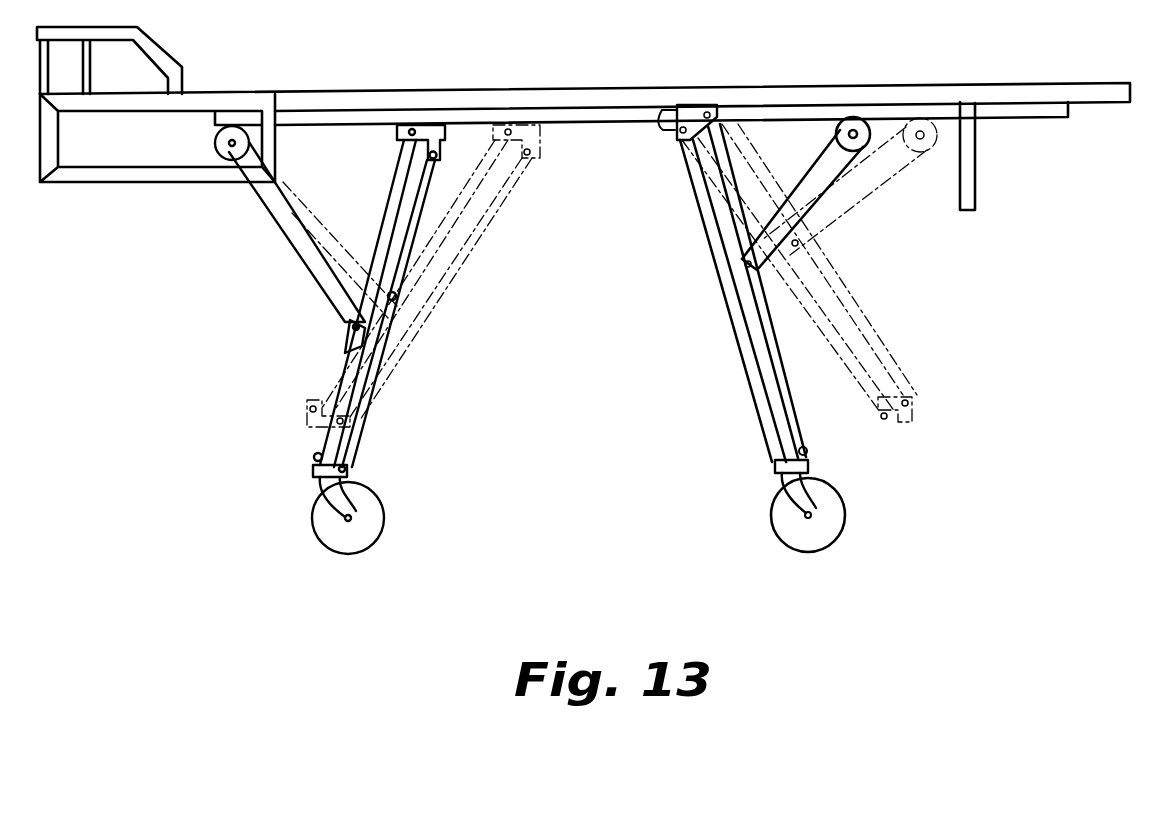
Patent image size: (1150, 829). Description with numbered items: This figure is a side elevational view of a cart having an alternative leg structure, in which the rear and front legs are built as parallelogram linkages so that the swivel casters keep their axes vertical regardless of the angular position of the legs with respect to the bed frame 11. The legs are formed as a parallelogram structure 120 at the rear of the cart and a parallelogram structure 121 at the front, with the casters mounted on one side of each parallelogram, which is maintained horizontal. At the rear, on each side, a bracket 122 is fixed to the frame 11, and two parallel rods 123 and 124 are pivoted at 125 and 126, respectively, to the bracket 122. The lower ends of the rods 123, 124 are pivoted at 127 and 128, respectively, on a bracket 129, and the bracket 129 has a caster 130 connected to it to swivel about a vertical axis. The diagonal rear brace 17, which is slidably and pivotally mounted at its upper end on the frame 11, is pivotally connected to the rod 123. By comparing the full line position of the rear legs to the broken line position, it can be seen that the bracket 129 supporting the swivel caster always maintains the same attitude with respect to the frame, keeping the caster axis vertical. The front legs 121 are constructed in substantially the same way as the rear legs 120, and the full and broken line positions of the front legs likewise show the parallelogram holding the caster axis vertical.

The bed frame 11 is at (851, 84).
The diagonal brace 17 is at (815, 180).
The parallelogram structure 120 is at (798, 293).
The parallelogram structure 121 is at (389, 378).
The bracket 122 is at (695, 113).
The rod 123 is at (742, 366).
The rod 124 is at (742, 330).
The pivot 125 is at (723, 110).
The pivot 126 is at (668, 126).
The pivot 127 is at (808, 452).
The pivot 128 is at (777, 466).
The bracket 129 is at (809, 463).
The caster 130 is at (830, 527).